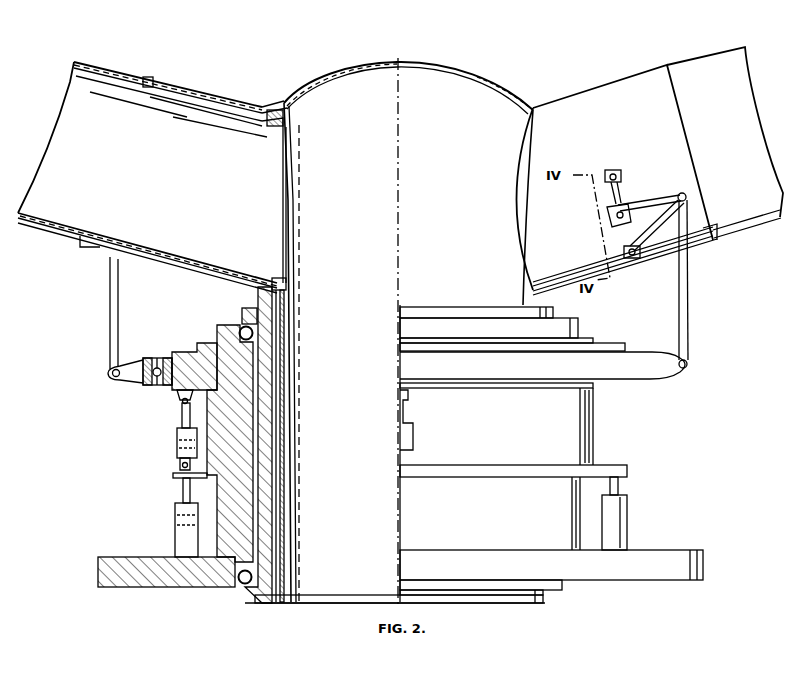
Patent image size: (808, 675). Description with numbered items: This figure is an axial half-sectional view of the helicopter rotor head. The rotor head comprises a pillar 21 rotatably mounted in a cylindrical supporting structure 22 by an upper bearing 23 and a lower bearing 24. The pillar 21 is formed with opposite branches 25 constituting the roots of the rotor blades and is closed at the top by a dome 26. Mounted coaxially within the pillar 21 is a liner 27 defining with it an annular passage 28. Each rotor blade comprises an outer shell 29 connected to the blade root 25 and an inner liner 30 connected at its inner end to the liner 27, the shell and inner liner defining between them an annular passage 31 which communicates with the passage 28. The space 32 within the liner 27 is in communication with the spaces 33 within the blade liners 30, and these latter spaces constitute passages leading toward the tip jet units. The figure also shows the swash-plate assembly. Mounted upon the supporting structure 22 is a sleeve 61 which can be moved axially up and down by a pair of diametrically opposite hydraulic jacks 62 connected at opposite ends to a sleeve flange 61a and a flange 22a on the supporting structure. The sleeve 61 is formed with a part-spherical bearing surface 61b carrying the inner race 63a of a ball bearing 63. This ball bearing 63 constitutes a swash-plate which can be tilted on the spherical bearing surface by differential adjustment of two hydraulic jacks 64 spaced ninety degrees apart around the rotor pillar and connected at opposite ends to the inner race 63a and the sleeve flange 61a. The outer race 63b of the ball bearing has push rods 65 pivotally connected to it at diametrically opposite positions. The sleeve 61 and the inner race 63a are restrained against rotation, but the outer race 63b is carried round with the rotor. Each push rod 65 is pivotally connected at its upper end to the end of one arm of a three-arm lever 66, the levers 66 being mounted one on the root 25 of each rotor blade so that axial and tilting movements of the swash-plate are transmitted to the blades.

The pillar 21 is at (261, 601).
The cylindrical supporting structure 22 is at (222, 483).
The flange on supporting structure 22a is at (127, 586).
The upper bearing 23 is at (241, 328).
The lower bearing 24 is at (239, 584).
The branch 25 is at (189, 92).
The dome 26 is at (458, 69).
The liner 27 is at (285, 440).
The annular passage 28 is at (276, 502).
The outer shell 29 is at (103, 66).
The inner liner 30 is at (204, 112).
The annular passage 31 is at (162, 97).
The space within liner 32 is at (346, 378).
The space within blade liner 33 is at (182, 188).
The sleeve 61 is at (207, 413).
The sleeve flange 61a is at (173, 476).
The part-spherical bearing surface 61b is at (194, 353).
The hydraulic jack 62 is at (175, 539).
The ball bearing 63 is at (156, 358).
The inner race 63a is at (171, 389).
The outer race 63b is at (147, 388).
The hydraulic jack 64 is at (176, 452).
The push rod 65 is at (110, 298).
The three-arm lever 66 is at (654, 200).